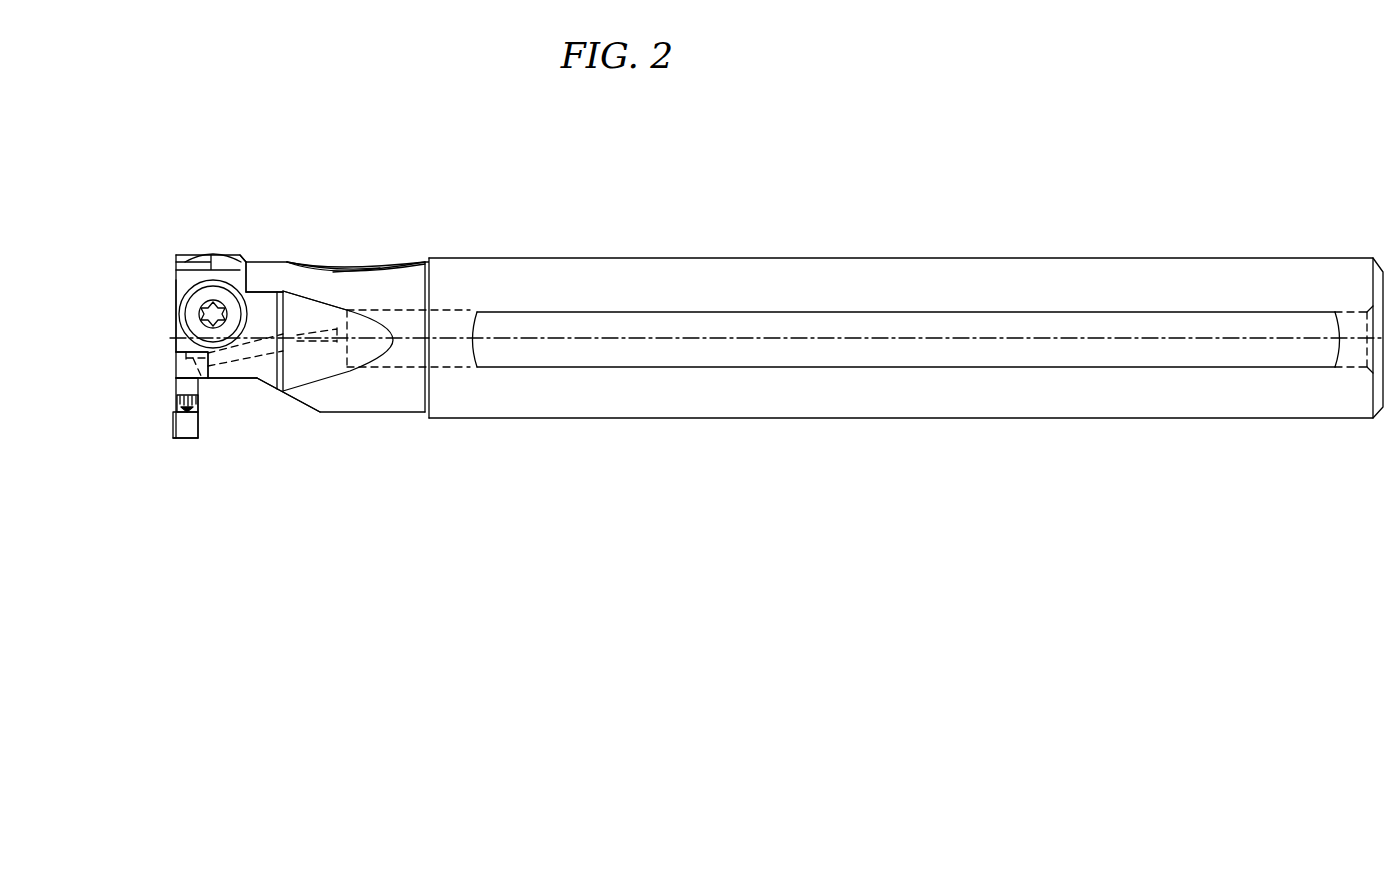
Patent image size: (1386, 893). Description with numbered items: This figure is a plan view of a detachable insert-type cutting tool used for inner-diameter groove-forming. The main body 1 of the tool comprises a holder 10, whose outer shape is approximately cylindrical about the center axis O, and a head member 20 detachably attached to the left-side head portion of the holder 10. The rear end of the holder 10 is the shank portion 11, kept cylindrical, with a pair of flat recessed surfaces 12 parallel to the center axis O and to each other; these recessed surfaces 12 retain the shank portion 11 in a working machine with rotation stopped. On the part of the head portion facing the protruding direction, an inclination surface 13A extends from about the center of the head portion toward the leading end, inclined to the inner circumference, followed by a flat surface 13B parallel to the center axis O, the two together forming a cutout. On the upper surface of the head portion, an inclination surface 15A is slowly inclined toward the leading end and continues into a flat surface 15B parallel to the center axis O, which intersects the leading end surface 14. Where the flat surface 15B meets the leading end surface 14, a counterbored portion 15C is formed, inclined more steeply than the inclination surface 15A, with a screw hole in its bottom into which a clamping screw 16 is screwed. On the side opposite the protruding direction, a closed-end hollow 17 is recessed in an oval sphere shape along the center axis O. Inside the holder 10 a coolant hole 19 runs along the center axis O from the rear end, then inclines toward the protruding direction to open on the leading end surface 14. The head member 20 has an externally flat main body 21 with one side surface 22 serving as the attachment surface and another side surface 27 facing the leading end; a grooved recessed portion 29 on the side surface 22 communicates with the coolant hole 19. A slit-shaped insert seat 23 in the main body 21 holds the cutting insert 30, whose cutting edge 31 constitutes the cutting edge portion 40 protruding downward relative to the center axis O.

The main body 1 is at (796, 177).
The holder 10 is at (876, 240).
The shank portion 11 is at (952, 273).
The recessed surfaces 12 is at (1022, 330).
The inclination surface 13A is at (300, 407).
The flat surface 13B is at (243, 378).
The leading end surface 14 is at (195, 267).
The inclination surface 15A is at (348, 267).
The flat surface 15B is at (305, 300).
The counterbored portion 15C is at (256, 292).
The clamping screw 16 is at (229, 286).
The closed-end hollow (dimple) 17 is at (376, 271).
The coolant hole 19 is at (448, 353).
The head member 20 is at (166, 251).
The main body 21 is at (180, 287).
The side surface 22 is at (222, 250).
The insert seat 23 is at (170, 354).
The side surface 27 is at (177, 292).
The grooved recessed portion (first groove) 29 is at (202, 378).
The cutting insert 30 is at (170, 411).
The cutting edge 31 is at (187, 440).
The cutting edge portion 40 is at (157, 448).
The center axis O is at (685, 338).